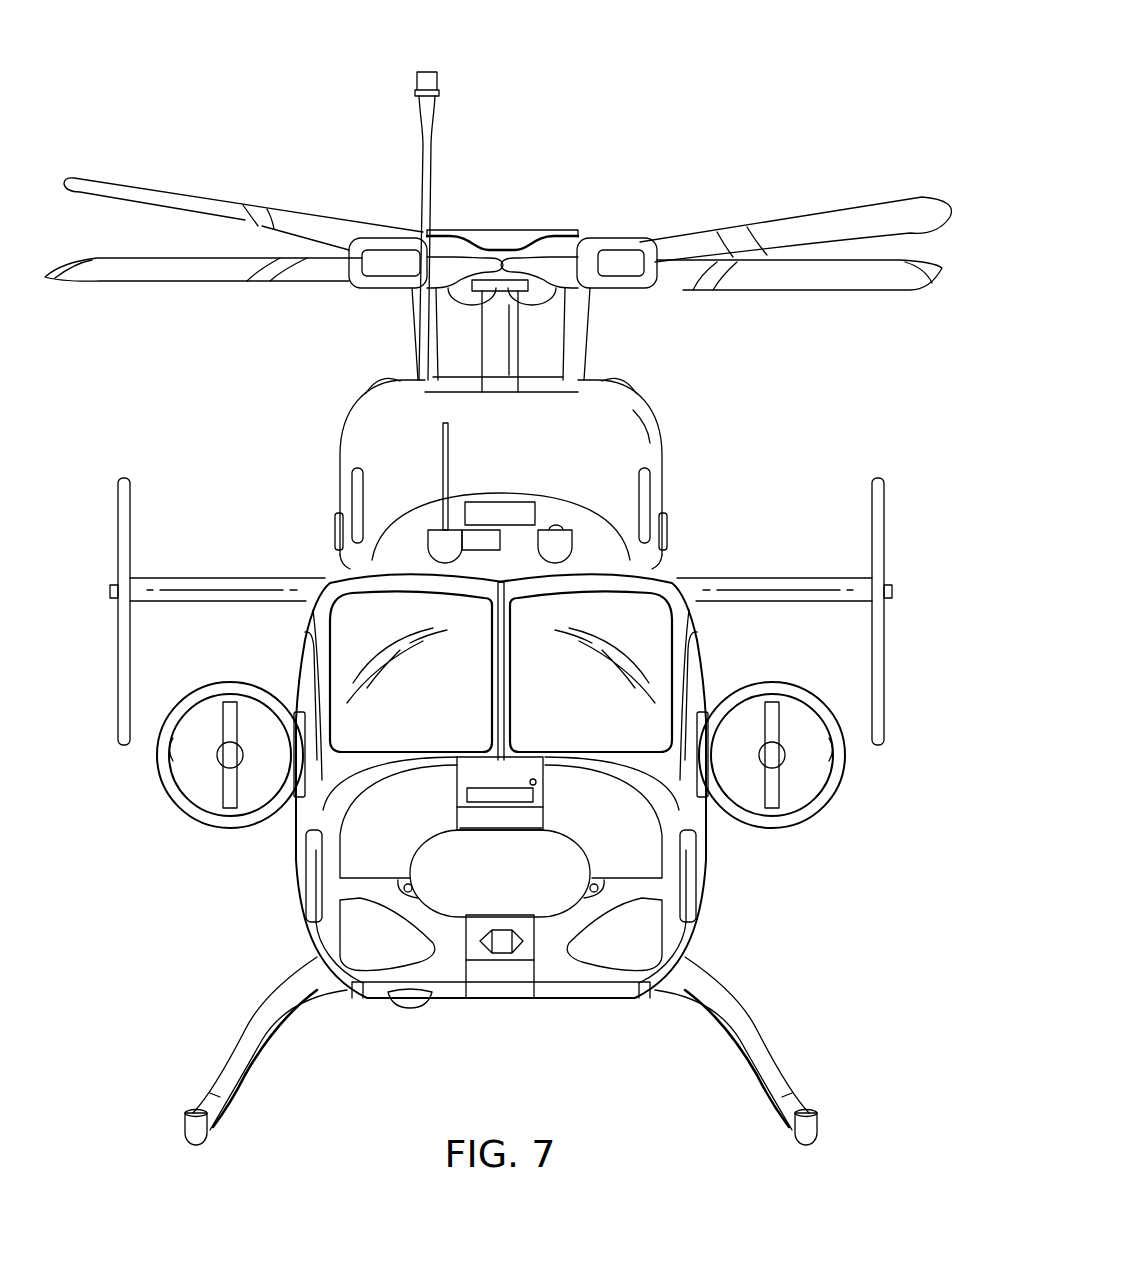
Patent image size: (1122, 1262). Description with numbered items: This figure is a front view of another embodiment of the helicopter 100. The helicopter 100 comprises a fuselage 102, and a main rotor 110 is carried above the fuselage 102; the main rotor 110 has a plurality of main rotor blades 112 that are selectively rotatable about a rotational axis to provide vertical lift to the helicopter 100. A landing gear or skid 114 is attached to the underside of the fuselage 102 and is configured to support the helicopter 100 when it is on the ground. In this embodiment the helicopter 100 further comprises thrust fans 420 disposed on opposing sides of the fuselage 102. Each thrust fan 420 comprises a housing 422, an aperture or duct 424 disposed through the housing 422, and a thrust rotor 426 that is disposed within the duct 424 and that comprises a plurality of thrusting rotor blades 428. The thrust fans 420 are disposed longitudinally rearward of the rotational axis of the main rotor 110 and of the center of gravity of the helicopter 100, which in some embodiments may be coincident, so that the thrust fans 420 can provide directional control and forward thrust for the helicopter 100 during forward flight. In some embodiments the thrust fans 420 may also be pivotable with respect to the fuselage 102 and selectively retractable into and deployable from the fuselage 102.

The helicopter 100 is at (729, 82).
The fuselage 102 is at (500, 999).
The main rotor 110 is at (513, 222).
The main rotor blades 112 is at (205, 203).
The landing gear or skid 114 is at (780, 1060).
The thrust fans 420 is at (164, 799).
The housing 422 is at (201, 822).
The aperture or duct 424 is at (160, 768).
The thrust rotor 426 is at (249, 738).
The thrusting rotor blades 428 is at (238, 788).